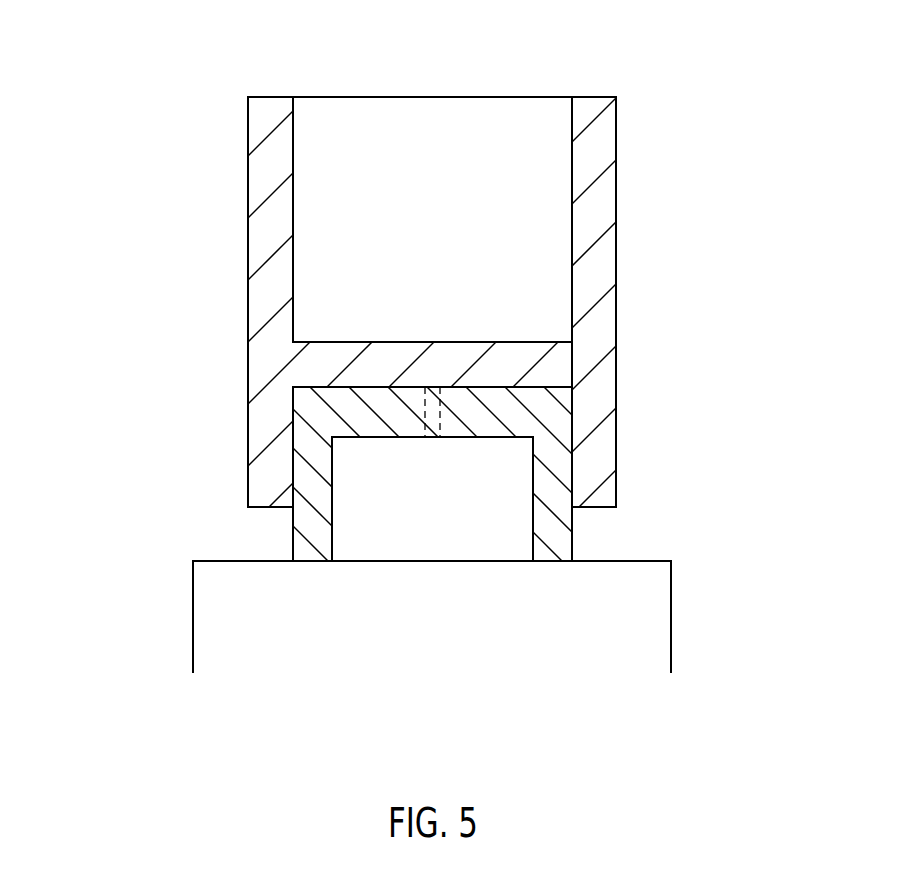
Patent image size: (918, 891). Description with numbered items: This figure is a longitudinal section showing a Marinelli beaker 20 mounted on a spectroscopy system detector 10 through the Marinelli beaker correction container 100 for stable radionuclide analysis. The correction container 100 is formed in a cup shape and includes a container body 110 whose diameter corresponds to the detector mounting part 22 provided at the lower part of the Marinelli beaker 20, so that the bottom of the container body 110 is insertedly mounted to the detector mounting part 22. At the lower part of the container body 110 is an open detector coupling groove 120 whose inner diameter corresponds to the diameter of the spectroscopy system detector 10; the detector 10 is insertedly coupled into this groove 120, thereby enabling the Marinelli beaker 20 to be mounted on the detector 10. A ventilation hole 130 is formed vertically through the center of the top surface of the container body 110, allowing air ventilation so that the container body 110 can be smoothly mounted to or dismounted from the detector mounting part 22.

The Marinelli beaker 20 is at (616, 223).
The detector mounting part 22 is at (572, 453).
The Marinelli beaker correction container 100 is at (572, 488).
The spectroscopy system detector 10 is at (363, 488).
The container body 110 is at (313, 529).
The detector coupling groove 120 is at (533, 495).
The ventilation hole 130 is at (410, 402).